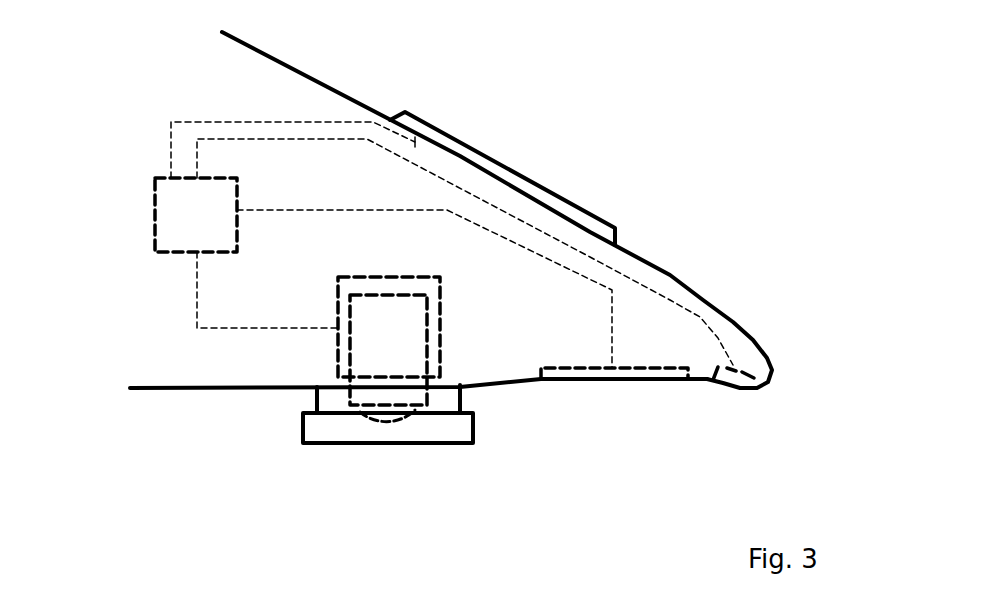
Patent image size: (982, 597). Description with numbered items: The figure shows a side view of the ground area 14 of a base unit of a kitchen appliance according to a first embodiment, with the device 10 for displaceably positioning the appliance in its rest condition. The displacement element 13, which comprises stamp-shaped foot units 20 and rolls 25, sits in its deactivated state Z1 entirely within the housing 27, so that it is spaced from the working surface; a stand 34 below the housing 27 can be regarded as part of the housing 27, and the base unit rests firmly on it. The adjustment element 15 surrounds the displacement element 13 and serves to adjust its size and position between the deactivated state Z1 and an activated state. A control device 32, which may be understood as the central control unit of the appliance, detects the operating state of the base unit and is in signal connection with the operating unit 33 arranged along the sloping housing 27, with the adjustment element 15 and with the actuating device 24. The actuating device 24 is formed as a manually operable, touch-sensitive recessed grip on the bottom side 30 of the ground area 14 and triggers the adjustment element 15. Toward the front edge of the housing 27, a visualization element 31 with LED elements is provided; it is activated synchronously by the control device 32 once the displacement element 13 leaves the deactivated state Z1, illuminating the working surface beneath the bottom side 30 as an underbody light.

The device 10 is at (80, 180).
The displacement element 13 is at (413, 335).
The ground area 14 is at (120, 360).
The adjustment element 15 is at (338, 293).
The foot unit 20 is at (343, 338).
The actuating device 24 is at (588, 366).
The roll 25 is at (402, 428).
The housing 27 is at (322, 82).
The bottom side 30 is at (215, 403).
The visualization element 31 is at (748, 368).
The control device 32 is at (155, 222).
The operating unit 33 is at (487, 157).
The stand 34 is at (460, 428).
The deactivated state Z1 is at (450, 397).